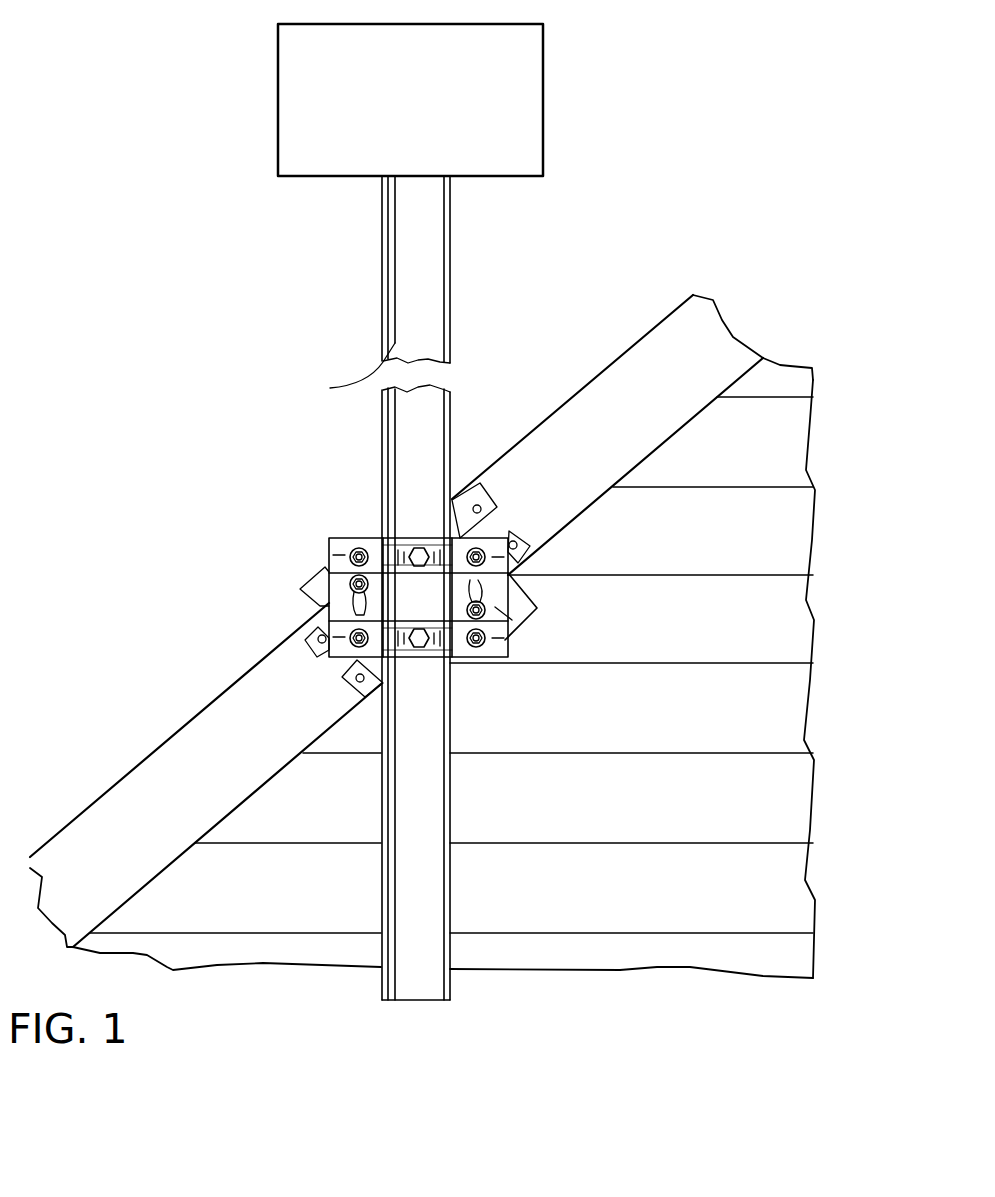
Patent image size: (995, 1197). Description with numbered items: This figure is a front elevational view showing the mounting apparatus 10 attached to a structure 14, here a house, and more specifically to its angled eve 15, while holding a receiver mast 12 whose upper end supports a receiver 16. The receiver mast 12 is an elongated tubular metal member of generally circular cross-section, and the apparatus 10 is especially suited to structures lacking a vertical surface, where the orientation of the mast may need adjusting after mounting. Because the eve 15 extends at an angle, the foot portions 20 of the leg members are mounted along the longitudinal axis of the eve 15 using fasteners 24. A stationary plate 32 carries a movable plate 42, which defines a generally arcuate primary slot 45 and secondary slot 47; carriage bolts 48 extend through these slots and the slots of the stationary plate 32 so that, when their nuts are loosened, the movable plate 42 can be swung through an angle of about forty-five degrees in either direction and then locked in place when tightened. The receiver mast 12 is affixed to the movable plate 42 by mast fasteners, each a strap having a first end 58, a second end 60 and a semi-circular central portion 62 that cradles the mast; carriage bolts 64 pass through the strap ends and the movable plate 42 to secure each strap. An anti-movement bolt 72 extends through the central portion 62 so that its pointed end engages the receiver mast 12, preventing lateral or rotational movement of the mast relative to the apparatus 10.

The apparatus 10 is at (286, 546).
The receiver mast 12 is at (383, 428).
The structure 14 is at (632, 690).
The eve 15 is at (200, 738).
The receiver 16 is at (293, 119).
The foot portions 20 is at (480, 496).
The fasteners 24 is at (482, 505).
The stationary plate 32 is at (545, 600).
The movable plate 42 is at (337, 607).
The primary slot 45 is at (323, 597).
The secondary slot 47 is at (520, 577).
The carriage bolts 48 is at (510, 612).
The first end 58 is at (330, 541).
The second end 60 is at (486, 540).
The central portion 62 is at (397, 545).
The carriage bolts 64 is at (349, 552).
The bolt 72 is at (418, 548).